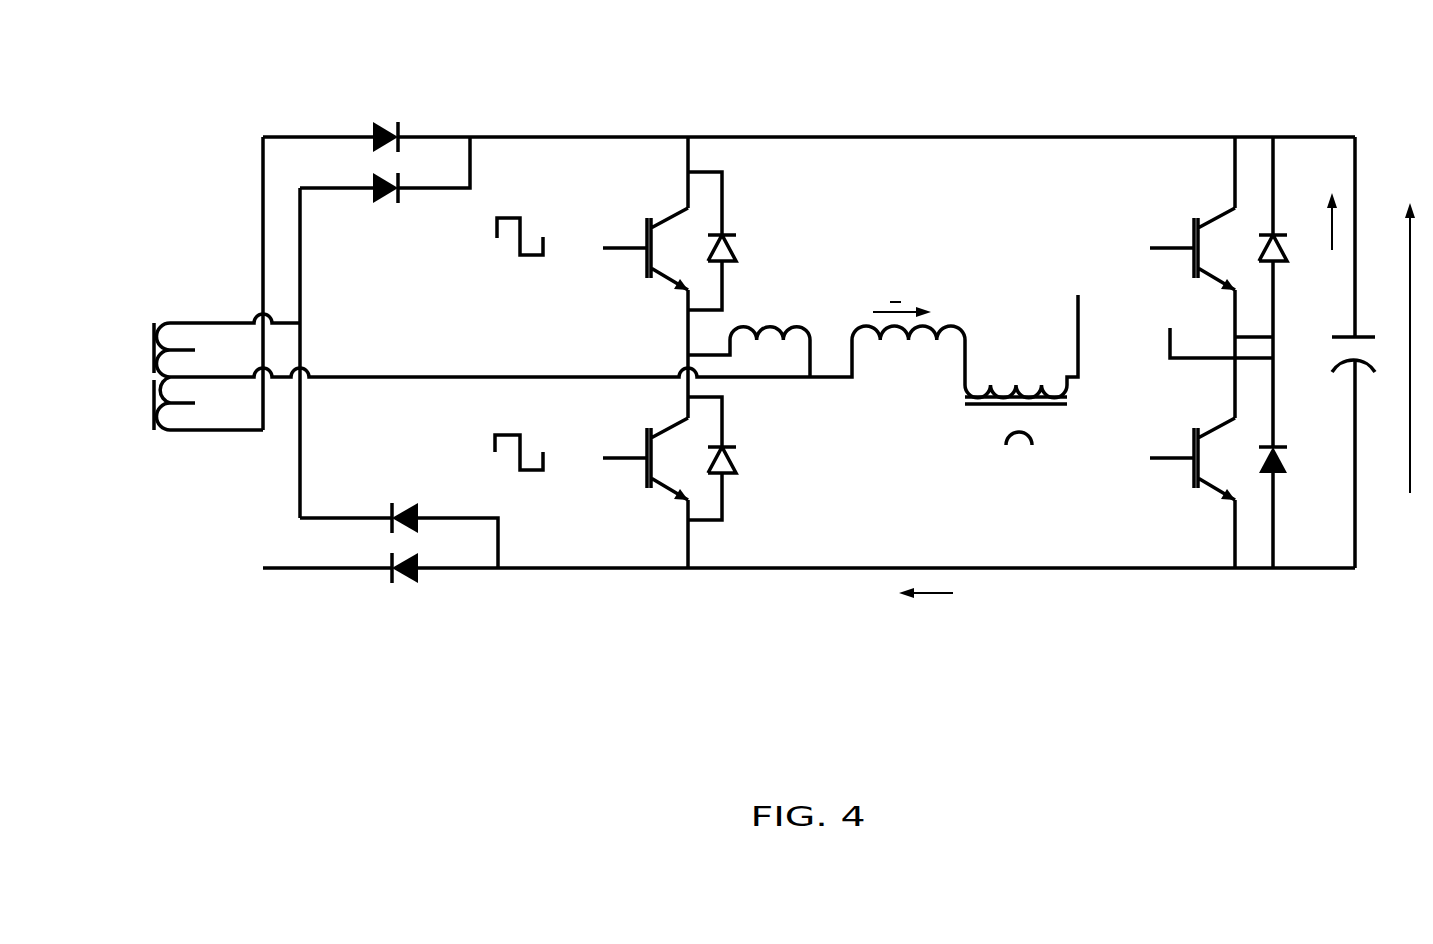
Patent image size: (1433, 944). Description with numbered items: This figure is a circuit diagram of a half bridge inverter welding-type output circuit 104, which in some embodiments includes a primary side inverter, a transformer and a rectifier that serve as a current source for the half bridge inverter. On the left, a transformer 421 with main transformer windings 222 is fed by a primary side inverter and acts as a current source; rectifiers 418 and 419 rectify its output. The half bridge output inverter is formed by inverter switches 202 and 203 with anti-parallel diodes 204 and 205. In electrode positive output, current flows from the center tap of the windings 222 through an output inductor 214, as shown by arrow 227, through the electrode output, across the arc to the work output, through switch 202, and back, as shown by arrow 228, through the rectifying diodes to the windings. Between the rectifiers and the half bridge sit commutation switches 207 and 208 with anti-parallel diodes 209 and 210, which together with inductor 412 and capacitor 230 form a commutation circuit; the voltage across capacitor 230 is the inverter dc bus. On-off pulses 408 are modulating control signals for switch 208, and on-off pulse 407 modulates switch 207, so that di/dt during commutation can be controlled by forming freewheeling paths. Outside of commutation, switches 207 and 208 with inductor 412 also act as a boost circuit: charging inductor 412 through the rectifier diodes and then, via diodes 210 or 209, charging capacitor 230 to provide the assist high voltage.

The output circuit 104 is at (740, 672).
The inverter switch 202 is at (1212, 492).
The inverter switch 203 is at (1214, 212).
The anti-parallel diode 204 is at (1284, 462).
The anti-parallel diode 205 is at (1288, 236).
The commutation switch 207 is at (661, 506).
The commutation switch 208 is at (664, 286).
The anti-parallel diode 209 is at (734, 458).
The anti-parallel diode 210 is at (729, 249).
The output inductor 214 is at (908, 340).
The main transformer windings 222 is at (176, 321).
The arrow 227 is at (891, 307).
The arrow 228 is at (930, 595).
The capacitor 230 is at (1342, 338).
The on-off pulse 407 is at (494, 450).
The on-off pulses 408 is at (496, 237).
The inductor 412 is at (771, 340).
The rectifier 418 is at (454, 602).
The rectifier 419 is at (424, 95).
The transformer 421 is at (133, 298).